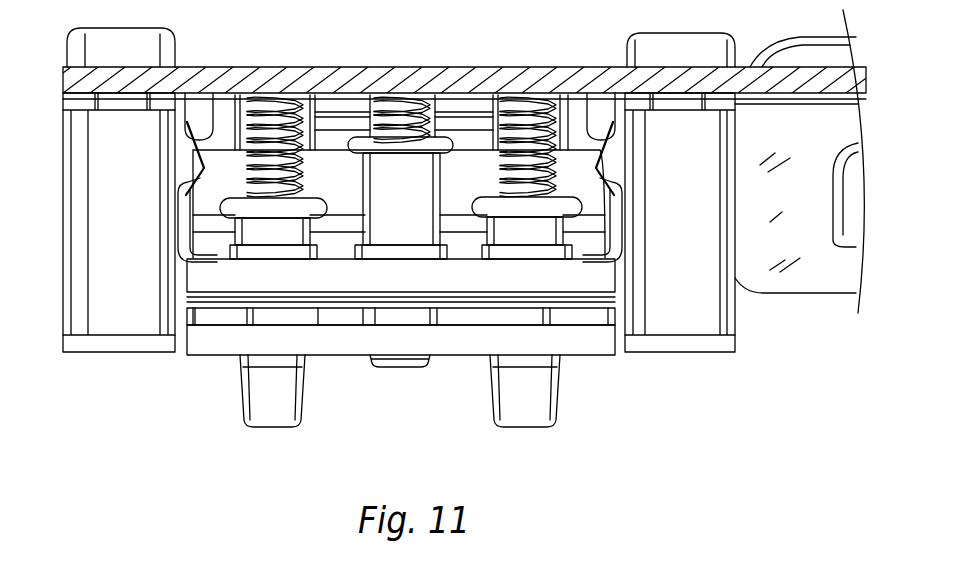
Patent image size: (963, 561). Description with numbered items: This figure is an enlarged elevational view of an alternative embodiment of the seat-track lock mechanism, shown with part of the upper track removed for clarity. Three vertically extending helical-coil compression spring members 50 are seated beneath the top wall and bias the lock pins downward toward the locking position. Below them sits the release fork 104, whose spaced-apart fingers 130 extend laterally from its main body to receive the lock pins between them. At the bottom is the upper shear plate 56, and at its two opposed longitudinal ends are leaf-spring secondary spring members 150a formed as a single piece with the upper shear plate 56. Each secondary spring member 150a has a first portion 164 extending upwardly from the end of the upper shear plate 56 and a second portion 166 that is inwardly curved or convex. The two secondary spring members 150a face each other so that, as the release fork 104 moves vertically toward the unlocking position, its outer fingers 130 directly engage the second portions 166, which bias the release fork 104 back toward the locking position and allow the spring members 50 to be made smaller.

The spring member 50 is at (265, 100).
The upper shear plate 56 is at (185, 273).
The release fork 104 is at (303, 92).
The finger 130 is at (213, 250).
The secondary spring member 150a is at (168, 243).
The first portion 164 is at (173, 212).
The second portion 166 is at (208, 135).